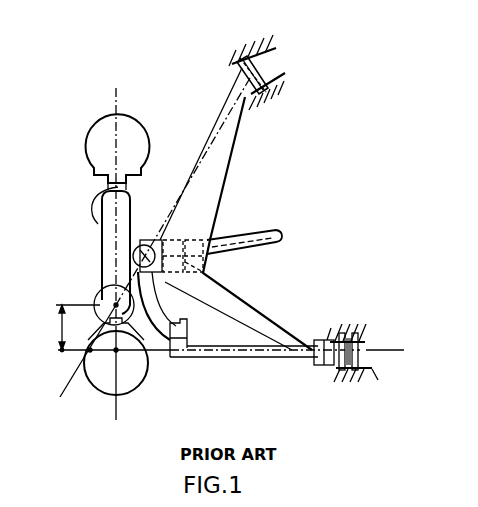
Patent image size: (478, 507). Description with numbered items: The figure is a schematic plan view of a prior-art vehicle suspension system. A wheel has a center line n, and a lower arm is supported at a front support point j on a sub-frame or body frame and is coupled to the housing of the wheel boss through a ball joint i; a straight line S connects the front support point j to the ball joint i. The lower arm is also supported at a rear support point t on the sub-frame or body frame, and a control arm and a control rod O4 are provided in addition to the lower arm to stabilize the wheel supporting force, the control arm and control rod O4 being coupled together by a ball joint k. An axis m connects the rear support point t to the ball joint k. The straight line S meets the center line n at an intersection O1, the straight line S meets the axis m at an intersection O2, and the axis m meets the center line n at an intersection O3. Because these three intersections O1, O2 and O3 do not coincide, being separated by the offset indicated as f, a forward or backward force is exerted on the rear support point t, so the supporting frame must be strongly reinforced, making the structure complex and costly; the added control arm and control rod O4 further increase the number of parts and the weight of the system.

The center line n is at (115, 244).
The axis m is at (241, 353).
The offset distance f is at (70, 328).
The intersection O1 is at (246, 158).
The intersection O2 is at (100, 147).
The intersection O3 is at (162, 330).
The control rod O4 is at (229, 358).
The ball joint i is at (139, 240).
The front support point j is at (270, 70).
The ball joint k is at (185, 358).
The straight line S is at (270, 46).
The rear support point t is at (364, 346).